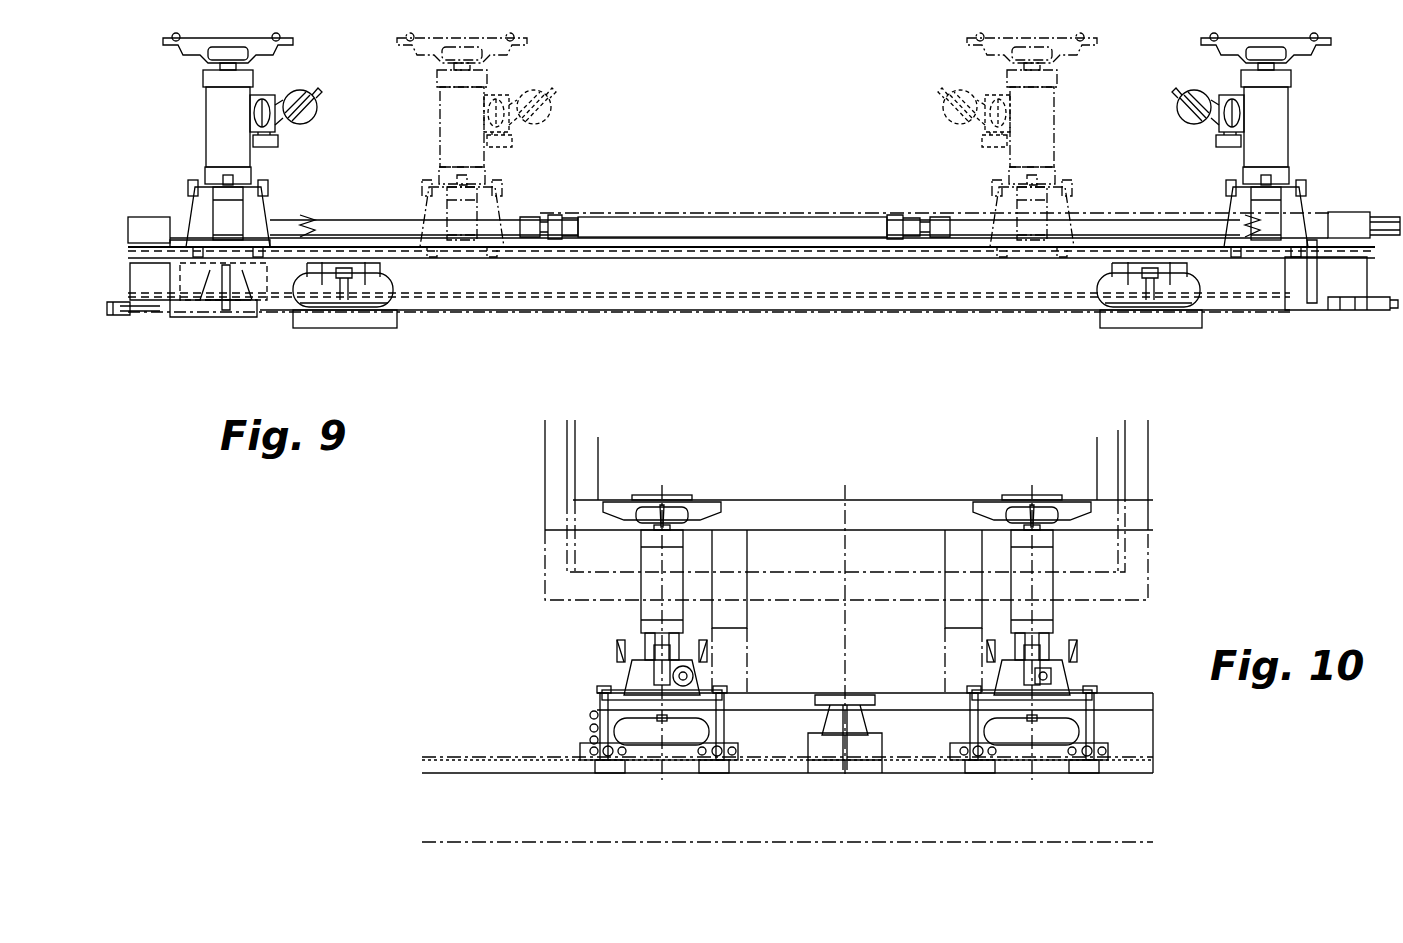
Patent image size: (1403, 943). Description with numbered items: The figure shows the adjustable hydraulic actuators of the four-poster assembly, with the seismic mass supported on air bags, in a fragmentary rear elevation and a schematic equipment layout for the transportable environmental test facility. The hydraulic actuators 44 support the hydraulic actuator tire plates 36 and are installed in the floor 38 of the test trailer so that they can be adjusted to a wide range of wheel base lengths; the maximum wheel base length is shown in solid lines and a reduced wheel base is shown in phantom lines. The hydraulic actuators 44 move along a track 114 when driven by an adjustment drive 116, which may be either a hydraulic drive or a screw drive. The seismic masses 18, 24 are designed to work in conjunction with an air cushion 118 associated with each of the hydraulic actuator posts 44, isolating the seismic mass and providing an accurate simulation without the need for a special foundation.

In FIG. 9, the seismic mass 18 is at (708, 265).
In FIG. 10, the seismic mass 18 is at (866, 700).
In FIG. 9, the seismic mass 24 is at (793, 302).
In FIG. 10, the seismic mass 24 is at (912, 748).
In FIG. 9, the hydraulic actuator tire plates 36 is at (253, 50).
In FIG. 10, the hydraulic actuator tire plates 36 is at (685, 497).
In FIG. 10, the floor 38 is at (820, 505).
In FIG. 9, the hydraulic actuators 44 is at (207, 120).
In FIG. 10, the hydraulic actuators 44 is at (648, 610).
In FIG. 9, the track 114 is at (175, 253).
In FIG. 9, the adjustment drive 116 is at (725, 222).
In FIG. 9, the air cushion 118 is at (362, 283).
In FIG. 10, the air cushion 118 is at (634, 731).